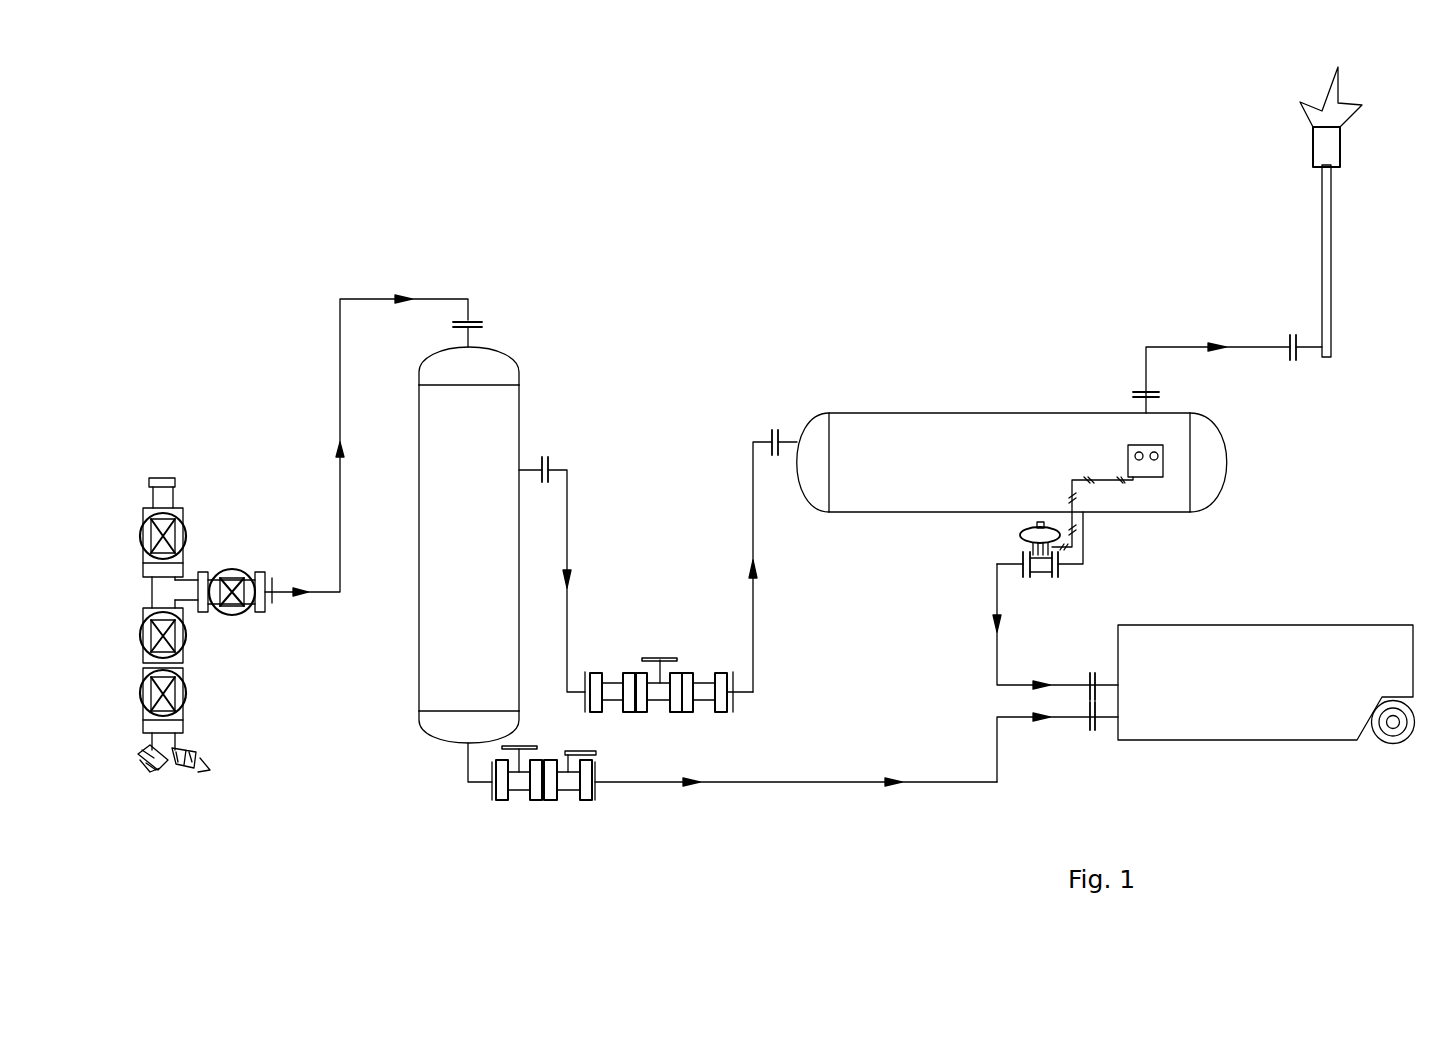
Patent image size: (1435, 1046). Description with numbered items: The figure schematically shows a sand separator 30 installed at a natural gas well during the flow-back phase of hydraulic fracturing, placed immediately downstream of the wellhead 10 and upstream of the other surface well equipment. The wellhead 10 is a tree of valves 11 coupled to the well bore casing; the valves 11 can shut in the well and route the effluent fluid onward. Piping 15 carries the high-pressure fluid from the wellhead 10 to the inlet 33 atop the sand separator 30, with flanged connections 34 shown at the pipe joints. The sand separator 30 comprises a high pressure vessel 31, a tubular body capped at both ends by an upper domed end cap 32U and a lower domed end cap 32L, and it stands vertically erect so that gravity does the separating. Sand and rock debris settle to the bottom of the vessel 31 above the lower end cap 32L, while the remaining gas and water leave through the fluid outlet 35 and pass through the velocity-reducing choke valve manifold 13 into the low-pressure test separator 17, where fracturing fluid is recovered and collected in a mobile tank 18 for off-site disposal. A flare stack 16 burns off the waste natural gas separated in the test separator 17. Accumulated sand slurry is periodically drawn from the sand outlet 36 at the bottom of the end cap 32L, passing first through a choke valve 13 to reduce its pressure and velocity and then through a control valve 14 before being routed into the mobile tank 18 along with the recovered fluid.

The wellhead 10 is at (208, 702).
The valves 11 is at (203, 570).
The choke valve manifold 13 is at (518, 788).
The control valve 14 is at (567, 793).
The piping 15 is at (339, 332).
The flare stack 16 is at (1332, 223).
The test separator 17 is at (940, 413).
The mobile tank 18 is at (1262, 625).
The sand separator 30 is at (504, 533).
The high pressure vessel 31 is at (519, 432).
The upper domed end cap 32U is at (460, 347).
The lower domed end cap 32L is at (427, 733).
The inlet 33 is at (480, 338).
The flange 34 is at (470, 308).
The fluid outlet 35 is at (519, 512).
The sand outlet 36 is at (465, 745).